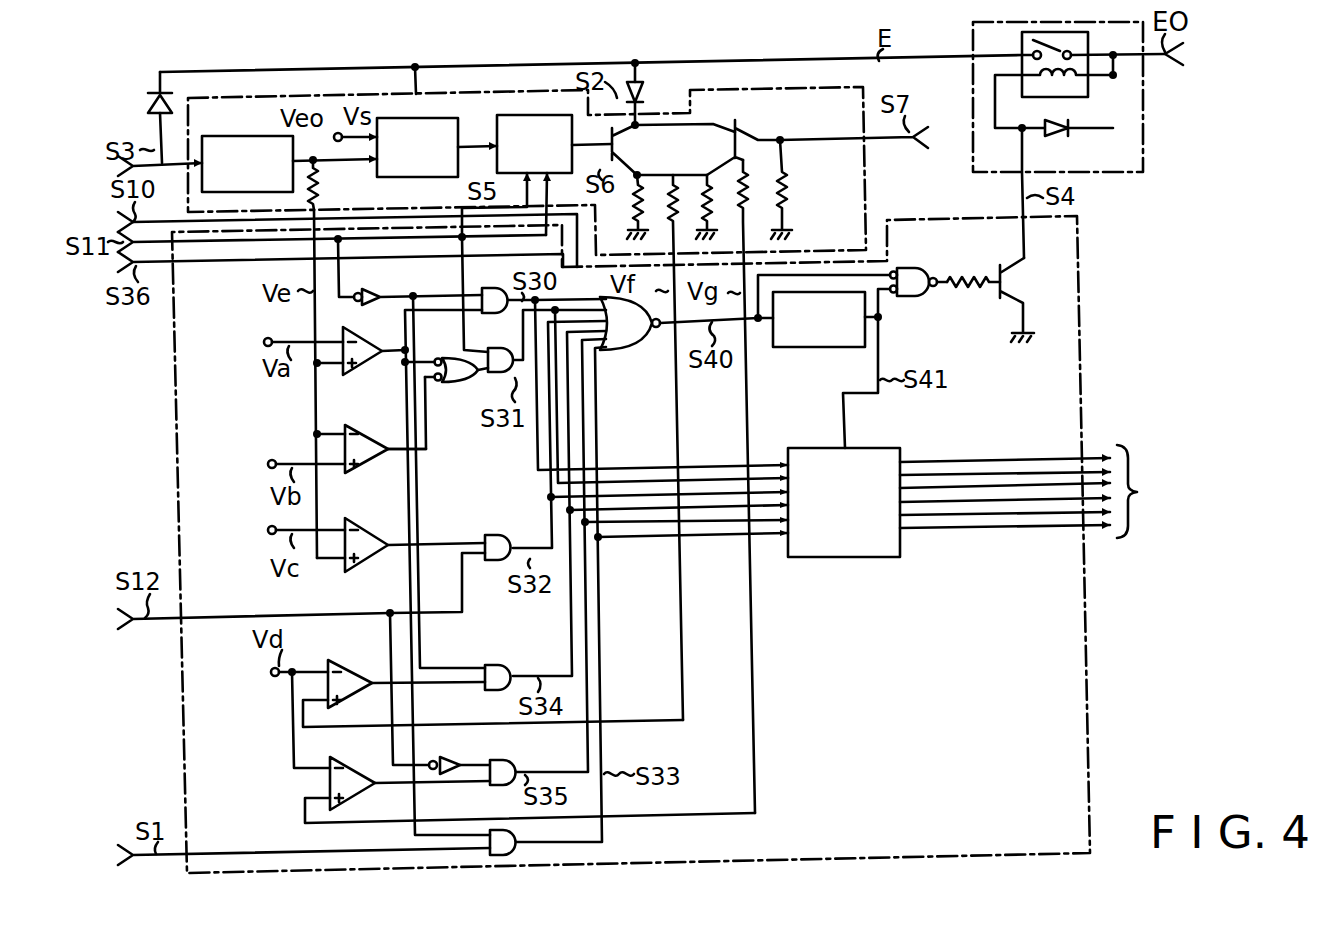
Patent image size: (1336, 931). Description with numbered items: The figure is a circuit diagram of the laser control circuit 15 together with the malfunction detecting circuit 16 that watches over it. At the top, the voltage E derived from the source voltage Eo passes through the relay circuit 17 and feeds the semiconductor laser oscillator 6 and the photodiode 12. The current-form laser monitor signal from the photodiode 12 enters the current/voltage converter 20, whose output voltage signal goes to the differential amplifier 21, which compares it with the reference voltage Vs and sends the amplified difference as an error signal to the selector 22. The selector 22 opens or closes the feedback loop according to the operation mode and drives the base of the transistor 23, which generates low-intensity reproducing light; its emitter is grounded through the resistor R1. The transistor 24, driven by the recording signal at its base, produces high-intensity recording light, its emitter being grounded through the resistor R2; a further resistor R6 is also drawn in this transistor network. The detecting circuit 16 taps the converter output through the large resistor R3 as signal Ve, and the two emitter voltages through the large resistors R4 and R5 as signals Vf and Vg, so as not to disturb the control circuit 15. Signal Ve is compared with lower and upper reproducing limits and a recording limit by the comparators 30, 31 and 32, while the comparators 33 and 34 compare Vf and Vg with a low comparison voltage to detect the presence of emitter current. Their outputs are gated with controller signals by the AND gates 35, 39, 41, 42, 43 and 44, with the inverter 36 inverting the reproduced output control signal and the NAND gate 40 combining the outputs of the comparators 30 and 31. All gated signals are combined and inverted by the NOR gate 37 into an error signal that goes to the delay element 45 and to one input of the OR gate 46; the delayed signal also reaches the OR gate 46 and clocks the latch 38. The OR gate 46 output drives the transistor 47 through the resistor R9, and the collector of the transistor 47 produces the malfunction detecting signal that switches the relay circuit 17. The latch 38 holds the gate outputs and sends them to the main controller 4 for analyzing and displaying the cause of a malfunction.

The main controller 4 is at (1215, 491).
The semiconductor laser oscillator 6 is at (652, 82).
The photodiode 12 is at (151, 98).
The laser control circuit 15 is at (866, 186).
The malfunction detecting circuit 16 is at (1092, 770).
The relay circuit 17 is at (1143, 130).
The current/voltage converter 20 is at (222, 138).
The differential amplifier 21 is at (428, 180).
The selector 22 is at (523, 113).
The transistor 23 is at (622, 144).
The transistor 24 is at (737, 126).
The comparator 30 is at (373, 368).
The comparator 31 is at (378, 470).
The comparator 32 is at (378, 561).
The comparator 33 is at (350, 661).
The comparator 34 is at (361, 761).
The AND gate 35 is at (492, 284).
The inverter 36 is at (376, 290).
The NOR gate 37 is at (626, 338).
The latch 38 is at (850, 558).
The AND gate 39 is at (500, 348).
The NAND gate 40 is at (455, 385).
The AND gate 41 is at (485, 532).
The AND gate 42 is at (521, 850).
The AND gate 43 is at (503, 663).
The AND gate 44 is at (517, 761).
The delay element 45 is at (450, 759).
The OR gate 46 is at (926, 266).
The transistor 47 is at (1028, 274).
The emitter resistor R1 is at (635, 216).
The emitter resistor R2 is at (733, 182).
The resistor R3 is at (319, 196).
The resistor R4 is at (688, 173).
The resistor R5 is at (773, 188).
The resistor R6 is at (790, 211).
The resistor R9 is at (963, 290).